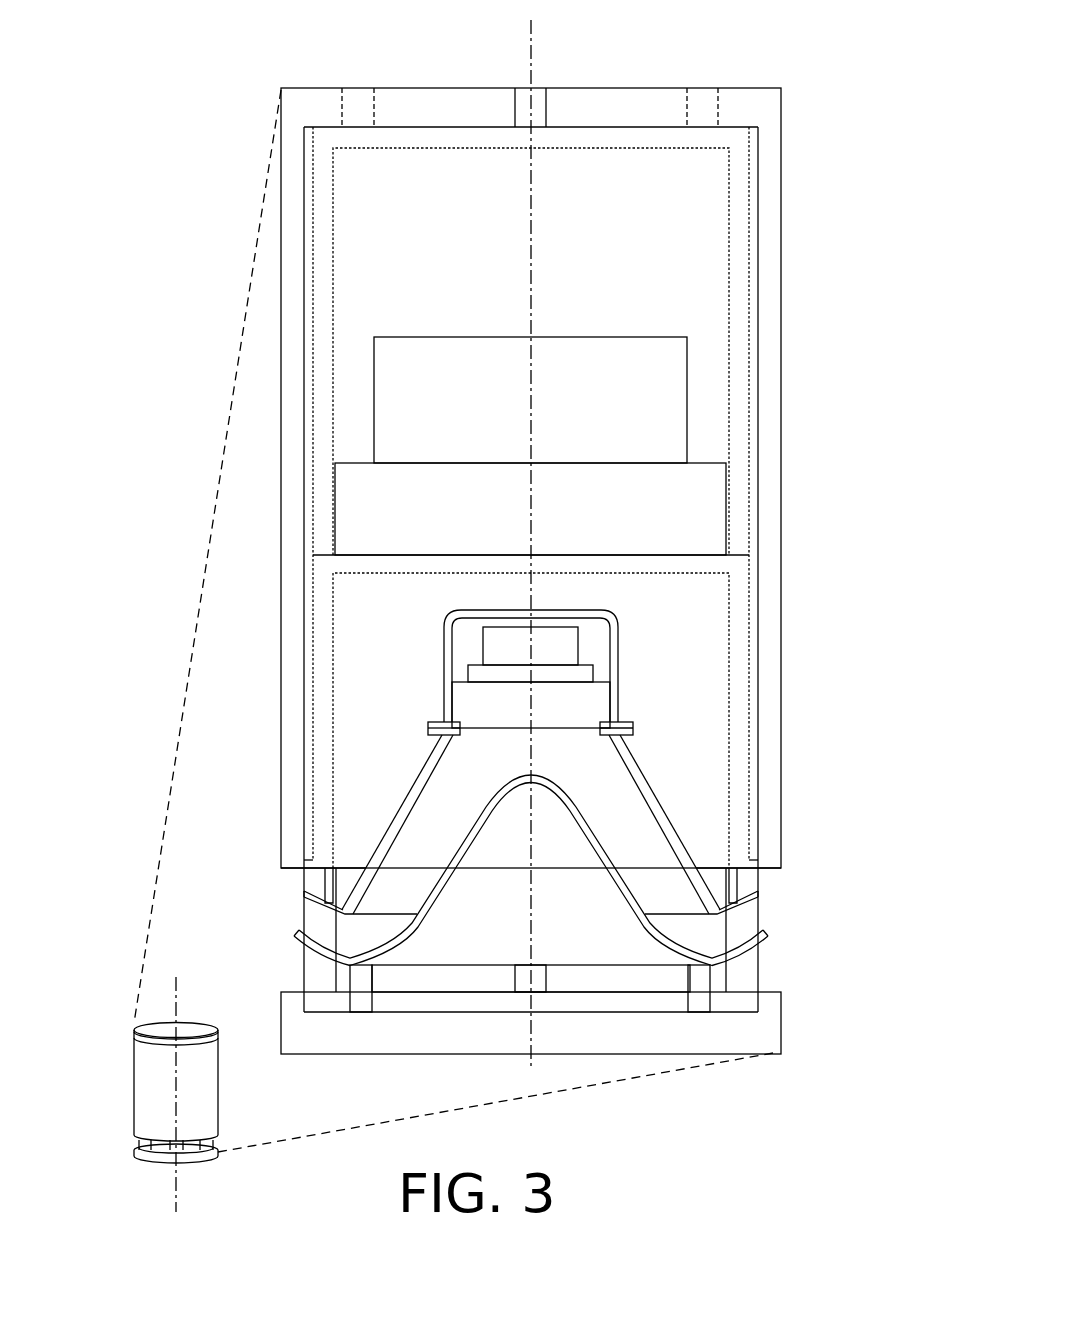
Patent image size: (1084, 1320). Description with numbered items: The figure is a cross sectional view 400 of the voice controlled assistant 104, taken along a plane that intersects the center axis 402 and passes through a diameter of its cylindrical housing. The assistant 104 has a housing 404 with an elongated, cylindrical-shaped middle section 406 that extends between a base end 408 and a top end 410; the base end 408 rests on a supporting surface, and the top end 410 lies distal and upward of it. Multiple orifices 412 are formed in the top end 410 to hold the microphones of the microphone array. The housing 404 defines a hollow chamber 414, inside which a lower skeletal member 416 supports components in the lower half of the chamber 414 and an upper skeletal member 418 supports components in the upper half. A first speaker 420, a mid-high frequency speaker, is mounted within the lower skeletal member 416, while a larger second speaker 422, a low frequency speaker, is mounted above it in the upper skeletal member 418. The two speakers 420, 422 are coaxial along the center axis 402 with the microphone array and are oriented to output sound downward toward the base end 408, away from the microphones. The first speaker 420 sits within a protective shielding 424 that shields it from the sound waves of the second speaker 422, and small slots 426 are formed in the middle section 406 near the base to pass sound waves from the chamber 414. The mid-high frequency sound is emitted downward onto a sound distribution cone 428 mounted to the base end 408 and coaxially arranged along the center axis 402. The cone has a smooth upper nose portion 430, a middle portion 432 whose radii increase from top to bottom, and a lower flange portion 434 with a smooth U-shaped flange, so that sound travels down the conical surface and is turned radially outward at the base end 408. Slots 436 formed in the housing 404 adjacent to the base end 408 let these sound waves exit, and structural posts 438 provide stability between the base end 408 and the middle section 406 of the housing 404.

The cross sectional view 400 is at (484, 600).
The center axis 402 is at (532, 52).
The housing 404 is at (437, 85).
The cylindrical-shaped middle section 406 is at (764, 336).
The base end 408 is at (672, 1044).
The top end 410 is at (600, 102).
The orifices 412 is at (360, 110).
The hollow chamber 414 is at (625, 250).
The lower skeletal member 416 is at (328, 648).
The upper skeletal member 418 is at (327, 242).
The first speaker 420 is at (592, 702).
The second speaker 422 is at (603, 357).
The protective shielding 424 is at (617, 633).
The slots 426 is at (772, 890).
The sound distribution cone 428 is at (448, 883).
The upper nose portion 430 is at (547, 783).
The middle portion 432 is at (610, 870).
The lower flange portion 434 is at (752, 953).
The slots 436 is at (297, 912).
The structural posts 438 is at (313, 960).
The voice controlled assistant 104 is at (205, 1163).